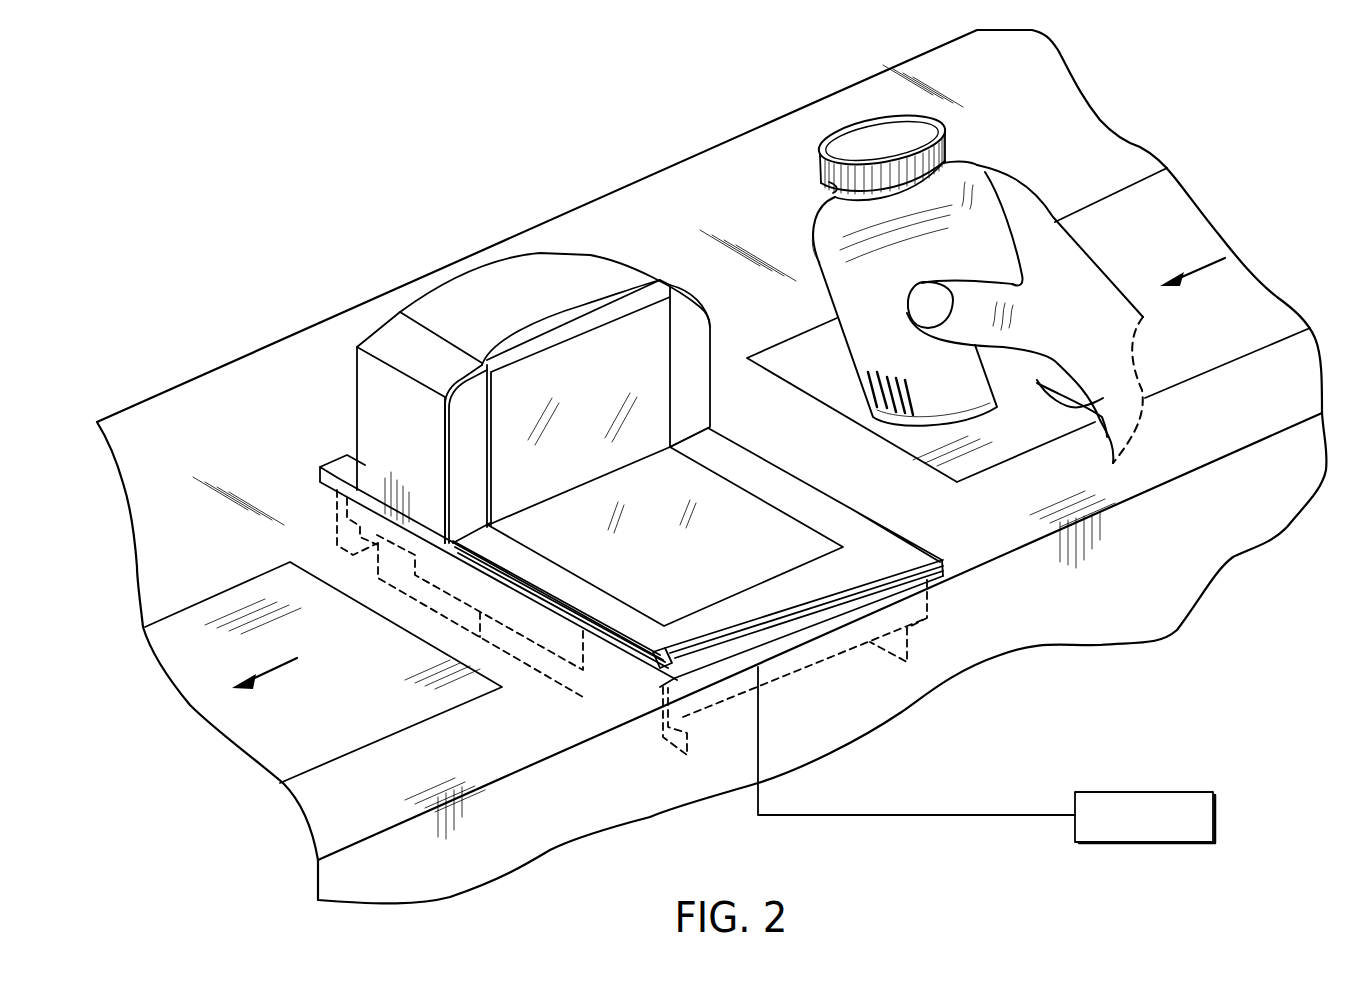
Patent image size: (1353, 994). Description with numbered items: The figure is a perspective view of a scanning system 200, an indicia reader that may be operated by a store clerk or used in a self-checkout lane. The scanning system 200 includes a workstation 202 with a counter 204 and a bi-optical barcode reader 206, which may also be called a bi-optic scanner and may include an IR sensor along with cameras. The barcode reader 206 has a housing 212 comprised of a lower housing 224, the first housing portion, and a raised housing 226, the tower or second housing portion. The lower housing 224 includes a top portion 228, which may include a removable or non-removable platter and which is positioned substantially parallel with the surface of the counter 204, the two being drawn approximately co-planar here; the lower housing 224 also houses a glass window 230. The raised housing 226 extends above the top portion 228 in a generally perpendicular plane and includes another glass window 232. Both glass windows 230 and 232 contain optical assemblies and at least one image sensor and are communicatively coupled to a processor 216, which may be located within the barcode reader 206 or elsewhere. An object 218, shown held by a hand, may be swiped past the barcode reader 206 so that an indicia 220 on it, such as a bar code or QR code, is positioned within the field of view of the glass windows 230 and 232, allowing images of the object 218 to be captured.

The scanning system 200 is at (163, 152).
The workstation 202 is at (675, 143).
The counter 204 is at (1037, 63).
The bi-optical barcode reader 206 is at (365, 440).
The housing 212 is at (390, 427).
The processor 216 is at (1215, 815).
The object 218 is at (946, 266).
The indicia 220 is at (910, 398).
The lower housing 224 is at (640, 739).
The raised housing 226 is at (495, 457).
The top portion 228 is at (648, 635).
The glass window 230 is at (778, 528).
The glass window 232 is at (557, 362).